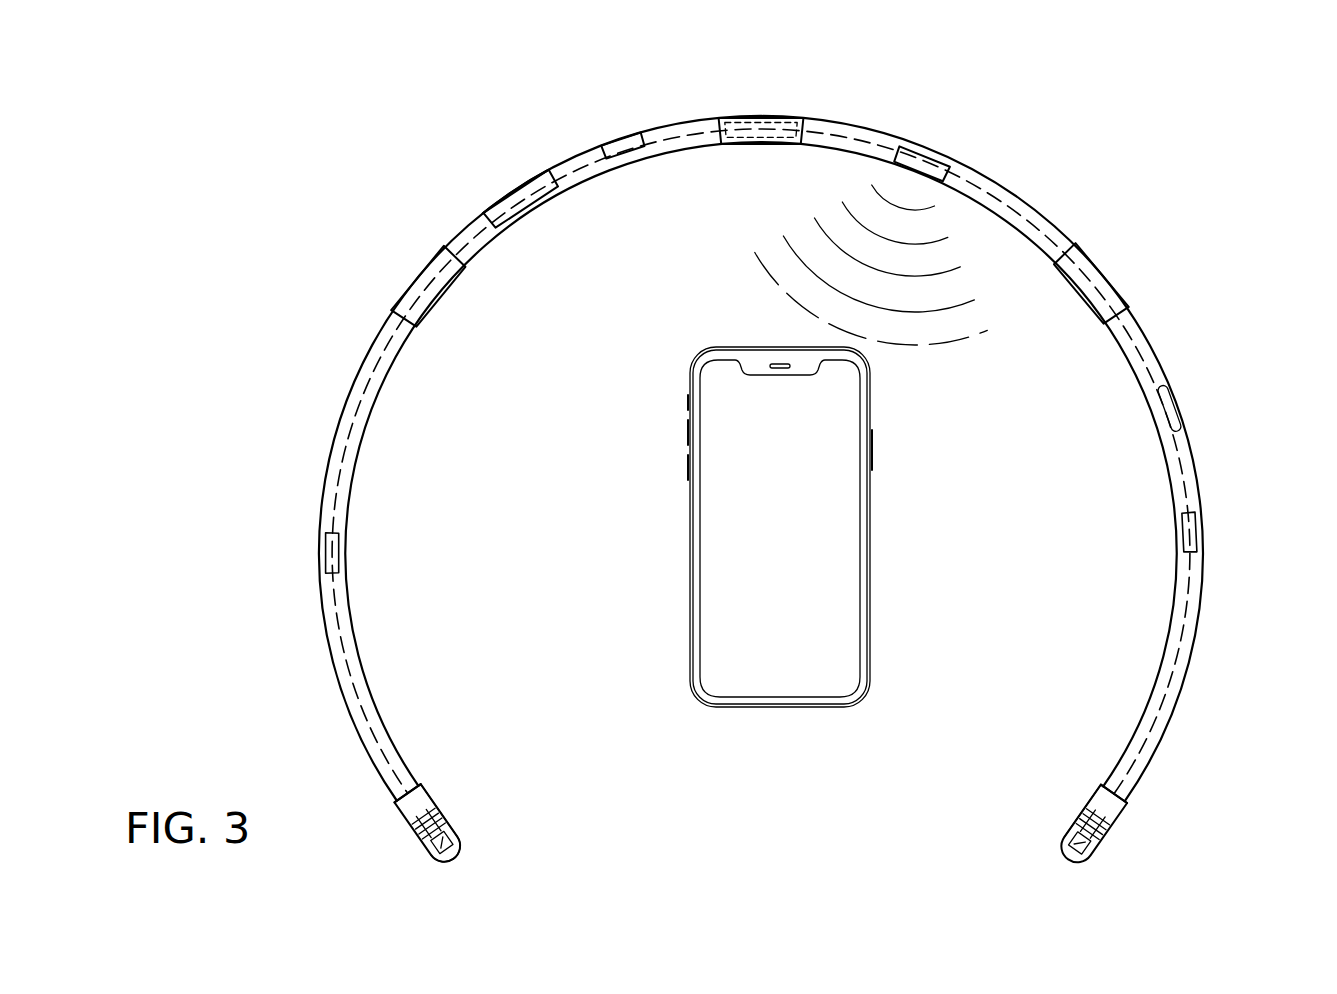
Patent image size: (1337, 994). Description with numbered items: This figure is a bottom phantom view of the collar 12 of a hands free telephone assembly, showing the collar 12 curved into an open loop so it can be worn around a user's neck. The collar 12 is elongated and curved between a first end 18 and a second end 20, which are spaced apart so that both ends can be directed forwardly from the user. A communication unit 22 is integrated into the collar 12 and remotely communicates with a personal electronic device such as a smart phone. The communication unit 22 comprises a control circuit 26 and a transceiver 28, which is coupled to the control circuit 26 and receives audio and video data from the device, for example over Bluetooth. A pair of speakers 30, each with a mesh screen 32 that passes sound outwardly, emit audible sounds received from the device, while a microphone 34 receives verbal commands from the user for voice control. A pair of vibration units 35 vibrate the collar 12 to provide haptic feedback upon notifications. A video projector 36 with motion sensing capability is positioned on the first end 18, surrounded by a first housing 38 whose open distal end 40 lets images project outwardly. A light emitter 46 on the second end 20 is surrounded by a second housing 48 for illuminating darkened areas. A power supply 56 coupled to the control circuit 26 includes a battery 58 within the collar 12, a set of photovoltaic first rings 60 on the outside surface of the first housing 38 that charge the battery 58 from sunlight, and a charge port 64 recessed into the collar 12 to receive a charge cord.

The collar 12 is at (848, 130).
The first end 18 is at (394, 814).
The second end 20 is at (1132, 810).
The communication unit 22 is at (528, 186).
The control circuit 26 is at (484, 224).
The transceiver 28 is at (916, 160).
The speakers 30 is at (418, 282).
The mesh screen 32 is at (1102, 858).
The microphone 34 is at (1170, 402).
The vibration units 35 is at (326, 544).
The video projector 36 is at (432, 864).
The first housing 38 is at (432, 804).
The distal end 40 is at (458, 866).
The light emitter 46 is at (1076, 850).
The second housing 48 is at (1104, 800).
The power supply 56 is at (708, 150).
The battery 58 is at (804, 141).
The first rings 60 is at (440, 804).
The charge port 64 is at (626, 138).